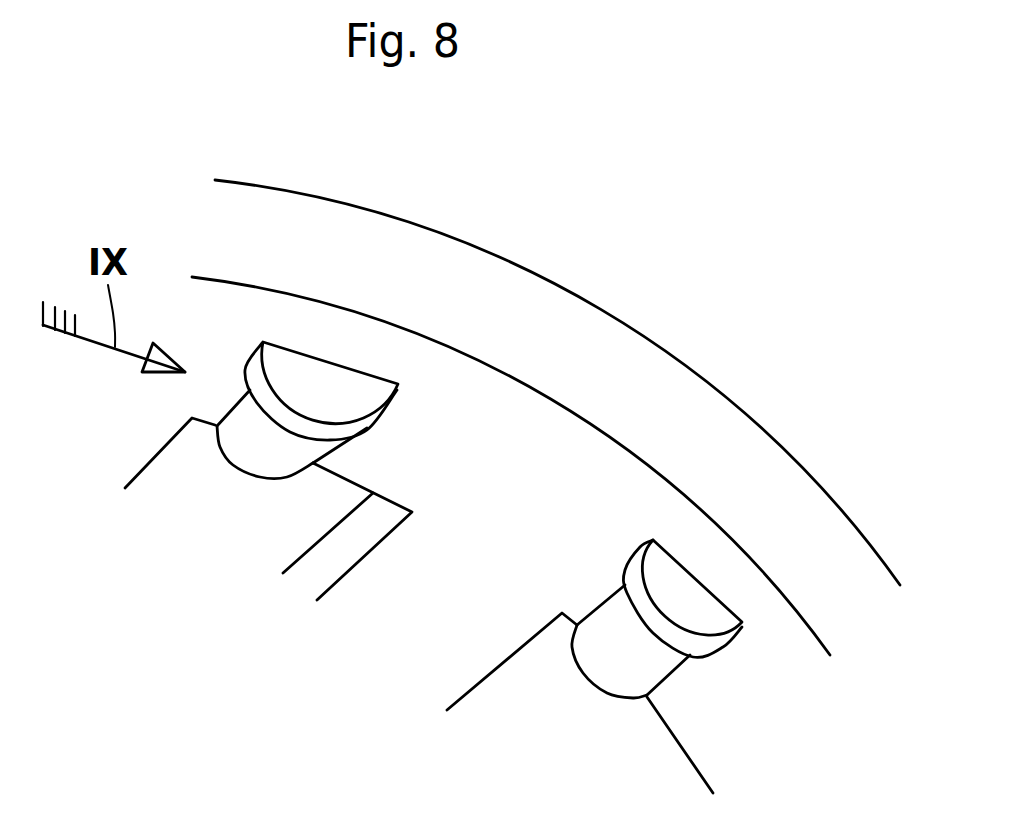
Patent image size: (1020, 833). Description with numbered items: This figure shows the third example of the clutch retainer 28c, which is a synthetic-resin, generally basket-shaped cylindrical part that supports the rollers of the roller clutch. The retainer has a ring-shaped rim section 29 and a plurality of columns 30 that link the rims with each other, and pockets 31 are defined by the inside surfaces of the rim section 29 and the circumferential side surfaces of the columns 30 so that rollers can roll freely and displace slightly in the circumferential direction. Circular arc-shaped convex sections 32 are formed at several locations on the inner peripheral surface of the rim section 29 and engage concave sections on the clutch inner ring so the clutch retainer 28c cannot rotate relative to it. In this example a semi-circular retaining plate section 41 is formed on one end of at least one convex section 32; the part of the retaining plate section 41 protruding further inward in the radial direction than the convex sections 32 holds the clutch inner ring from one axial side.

The clutch retainer 28c is at (660, 392).
The rim section 29 is at (267, 320).
The column 30 is at (418, 612).
The pocket 31 is at (153, 458).
The convex section 32 is at (250, 452).
The retaining plate section 41 is at (328, 383).